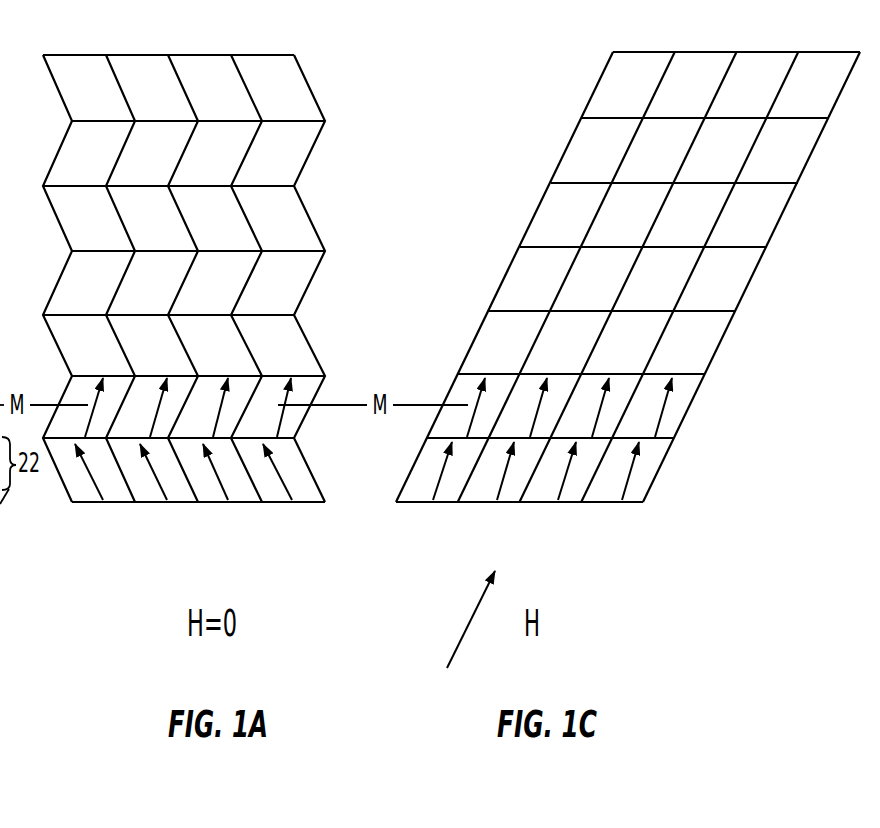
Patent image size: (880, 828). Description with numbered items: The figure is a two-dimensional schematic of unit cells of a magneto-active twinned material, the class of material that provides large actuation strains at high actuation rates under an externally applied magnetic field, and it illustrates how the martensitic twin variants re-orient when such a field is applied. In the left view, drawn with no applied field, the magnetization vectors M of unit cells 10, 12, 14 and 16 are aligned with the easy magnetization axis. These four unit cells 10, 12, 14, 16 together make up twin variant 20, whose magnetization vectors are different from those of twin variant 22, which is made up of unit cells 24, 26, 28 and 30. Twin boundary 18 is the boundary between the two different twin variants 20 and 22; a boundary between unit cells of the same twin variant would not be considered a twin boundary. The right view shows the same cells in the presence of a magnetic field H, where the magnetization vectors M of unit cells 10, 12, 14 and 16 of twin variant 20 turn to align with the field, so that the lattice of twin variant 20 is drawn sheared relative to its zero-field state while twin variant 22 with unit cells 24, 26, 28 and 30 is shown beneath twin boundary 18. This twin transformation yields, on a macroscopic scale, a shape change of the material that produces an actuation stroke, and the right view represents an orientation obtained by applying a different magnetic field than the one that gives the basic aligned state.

In FIG. 1A, the unit cell 10 is at (118, 387).
In FIG. 1C, the unit cell 10 is at (465, 381).
In FIG. 1A, the unit cell 12 is at (177, 386).
In FIG. 1C, the unit cell 12 is at (527, 381).
In FIG. 1A, the unit cell 14 is at (249, 384).
In FIG. 1C, the unit cell 14 is at (618, 387).
In FIG. 1A, the unit cell 16 is at (307, 386).
In FIG. 1C, the unit cell 16 is at (678, 395).
In FIG. 1A, the twin boundary 18 is at (282, 440).
In FIG. 1C, the twin boundary 18 is at (675, 438).
In FIG. 1A, the twin variant 20 is at (333, 423).
In FIG. 1C, the twin variant 20 is at (773, 382).
In FIG. 1A, the twin variant 22 is at (314, 444).
In FIG. 1C, the twin variant 22 is at (728, 448).
In FIG. 1A, the unit cell 24 is at (89, 491).
In FIG. 1C, the unit cell 24 is at (413, 491).
In FIG. 1A, the unit cell 26 is at (153, 491).
In FIG. 1C, the unit cell 26 is at (507, 491).
In FIG. 1A, the unit cell 28 is at (214, 491).
In FIG. 1C, the unit cell 28 is at (572, 491).
In FIG. 1A, the unit cell 30 is at (278, 491).
In FIG. 1C, the unit cell 30 is at (635, 491).